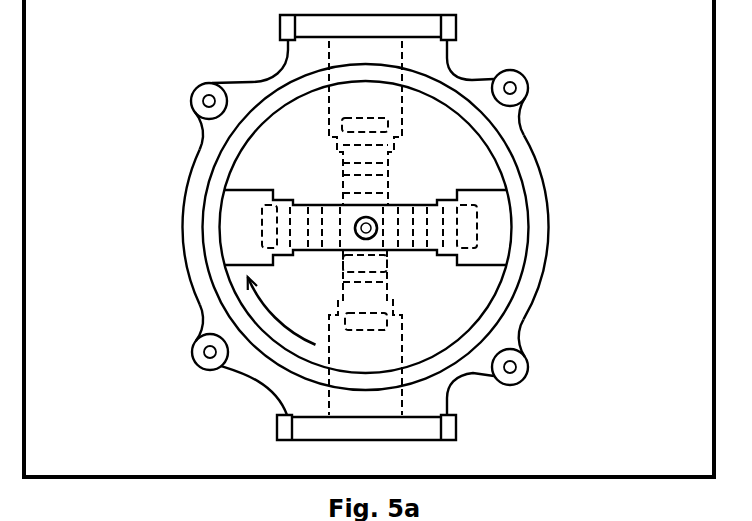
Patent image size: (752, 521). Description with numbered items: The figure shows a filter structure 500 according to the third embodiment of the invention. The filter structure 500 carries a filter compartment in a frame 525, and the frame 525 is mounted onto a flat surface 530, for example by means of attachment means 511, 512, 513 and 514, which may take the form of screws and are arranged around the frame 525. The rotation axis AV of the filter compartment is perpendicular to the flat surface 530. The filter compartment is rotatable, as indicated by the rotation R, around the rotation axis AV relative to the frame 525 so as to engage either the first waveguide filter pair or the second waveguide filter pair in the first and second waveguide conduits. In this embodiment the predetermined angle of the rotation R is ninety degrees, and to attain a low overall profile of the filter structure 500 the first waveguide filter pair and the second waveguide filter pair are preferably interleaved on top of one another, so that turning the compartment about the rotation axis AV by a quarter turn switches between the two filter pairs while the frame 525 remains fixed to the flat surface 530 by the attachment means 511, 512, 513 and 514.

The filter structure 500 is at (163, 276).
The attachment means 511 is at (153, 76).
The attachment means 512 is at (570, 73).
The attachment means 513 is at (565, 381).
The attachment means 514 is at (141, 376).
The frame 525 is at (423, 227).
The flat surface 530 is at (369, 260).
The rotation axis AV is at (377, 228).
The rotation R is at (282, 309).